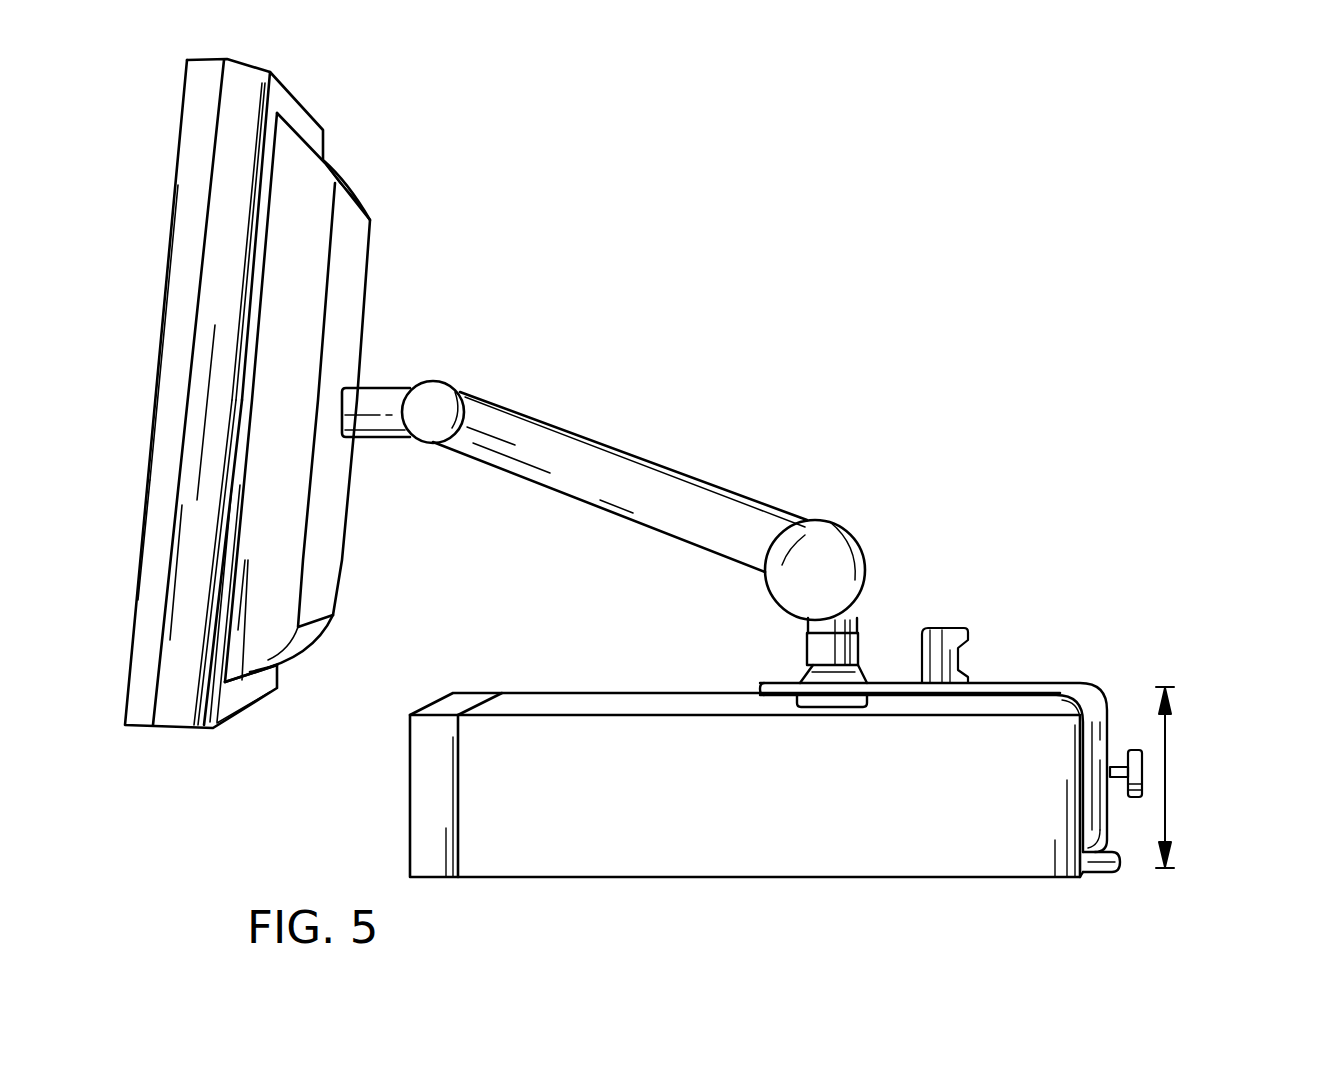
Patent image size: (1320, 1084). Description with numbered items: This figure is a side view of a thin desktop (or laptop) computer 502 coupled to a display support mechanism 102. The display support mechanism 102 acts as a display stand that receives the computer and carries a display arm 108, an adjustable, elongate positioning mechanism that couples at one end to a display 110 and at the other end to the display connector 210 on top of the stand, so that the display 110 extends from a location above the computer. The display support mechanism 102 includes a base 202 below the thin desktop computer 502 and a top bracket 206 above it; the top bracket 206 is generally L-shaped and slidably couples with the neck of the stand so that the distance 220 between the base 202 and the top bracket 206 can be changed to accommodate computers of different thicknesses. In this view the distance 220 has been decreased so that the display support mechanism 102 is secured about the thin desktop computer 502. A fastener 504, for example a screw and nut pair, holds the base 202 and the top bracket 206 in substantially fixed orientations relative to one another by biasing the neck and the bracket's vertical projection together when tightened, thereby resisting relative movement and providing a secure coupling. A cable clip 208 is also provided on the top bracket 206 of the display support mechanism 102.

The display support mechanism 102 is at (1104, 545).
The display arm 108 is at (600, 442).
The display 110 is at (288, 90).
The base 202 is at (1005, 877).
The top bracket 206 is at (1067, 683).
The cable clip 208 is at (942, 628).
The display connector 210 is at (807, 650).
The distance 220 is at (1167, 777).
The thin desktop computer 502 is at (772, 819).
The fastener 504 is at (1133, 800).